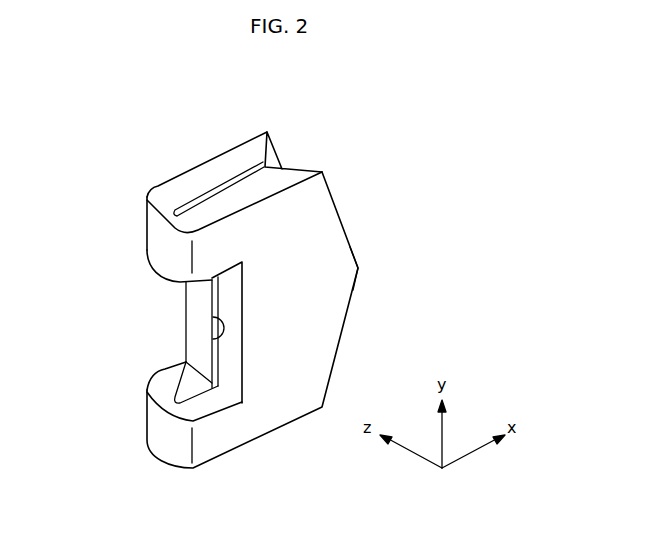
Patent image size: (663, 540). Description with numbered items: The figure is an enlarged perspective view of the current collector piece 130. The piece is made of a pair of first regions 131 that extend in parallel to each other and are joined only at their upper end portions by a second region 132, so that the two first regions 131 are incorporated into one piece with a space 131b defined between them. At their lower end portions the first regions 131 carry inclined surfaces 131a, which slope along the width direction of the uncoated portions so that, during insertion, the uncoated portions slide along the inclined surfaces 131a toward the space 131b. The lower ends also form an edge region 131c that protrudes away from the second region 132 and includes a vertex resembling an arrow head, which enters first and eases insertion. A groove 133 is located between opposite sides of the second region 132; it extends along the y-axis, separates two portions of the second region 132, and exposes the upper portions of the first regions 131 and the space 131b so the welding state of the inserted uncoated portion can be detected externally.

The current collector piece 130 is at (363, 182).
The first regions 131 is at (208, 165).
The inclined surfaces 131a is at (270, 157).
The space 131b is at (207, 341).
The edge region 131c is at (360, 268).
The second region 132 is at (167, 243).
The groove 133 is at (186, 298).